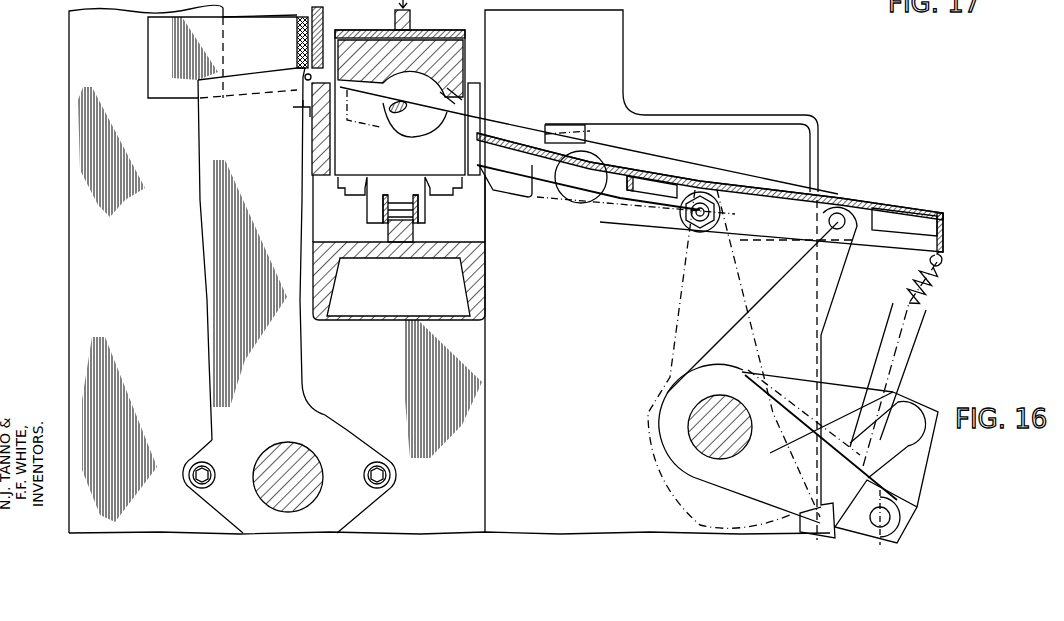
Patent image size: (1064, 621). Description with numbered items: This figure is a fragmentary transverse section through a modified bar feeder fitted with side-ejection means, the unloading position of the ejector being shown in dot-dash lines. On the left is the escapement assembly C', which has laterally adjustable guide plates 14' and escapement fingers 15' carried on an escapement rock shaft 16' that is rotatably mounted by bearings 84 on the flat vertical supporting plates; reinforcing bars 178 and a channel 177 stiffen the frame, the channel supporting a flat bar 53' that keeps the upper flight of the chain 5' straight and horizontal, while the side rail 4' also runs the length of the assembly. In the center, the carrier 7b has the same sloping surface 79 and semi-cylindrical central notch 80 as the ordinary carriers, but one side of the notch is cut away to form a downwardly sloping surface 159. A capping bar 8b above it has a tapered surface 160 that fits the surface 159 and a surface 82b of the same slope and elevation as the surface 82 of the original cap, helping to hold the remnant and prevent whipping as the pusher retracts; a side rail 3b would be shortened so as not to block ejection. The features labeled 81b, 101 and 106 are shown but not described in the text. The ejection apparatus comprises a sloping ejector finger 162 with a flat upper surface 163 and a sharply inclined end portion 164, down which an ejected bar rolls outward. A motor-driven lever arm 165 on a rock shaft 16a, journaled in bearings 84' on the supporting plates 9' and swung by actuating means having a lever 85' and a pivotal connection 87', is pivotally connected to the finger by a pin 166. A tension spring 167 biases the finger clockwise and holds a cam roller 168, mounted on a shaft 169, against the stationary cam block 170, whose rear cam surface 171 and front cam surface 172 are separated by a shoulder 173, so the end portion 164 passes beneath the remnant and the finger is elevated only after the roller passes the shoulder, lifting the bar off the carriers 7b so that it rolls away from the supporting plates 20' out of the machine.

The escapement assembly C' is at (56, 39).
The supporting plates 20' is at (427, 269).
The guide plates 14' is at (211, 52).
The escapement fingers 15' is at (314, 300).
The escapement rock shaft 16' is at (284, 460).
The rock shaft 16a is at (688, 430).
The bearings 84 is at (298, 454).
The bearings 84' is at (662, 507).
The lever 85' is at (767, 524).
The pivotal connection 87' is at (895, 468).
The side rail 4' is at (294, 162).
The carrier 7b is at (388, 175).
The capping bar 8b is at (470, 48).
The surface 82b is at (431, 66).
The bore 81b is at (413, 106).
The semi-cylindrical central notch 80 is at (429, 144).
The surface 82 is at (360, 117).
The sloping surface 79 is at (397, 114).
The plunger 101 is at (410, 14).
The downwardly sloping surface 159 is at (441, 166).
The tapered surface 160 is at (457, 100).
The inclined end portion 164 is at (454, 113).
The side rail 3b is at (474, 85).
The bracket 106 is at (376, 205).
The chain 5' is at (351, 231).
The flat bar 53' is at (425, 231).
The reinforcing bars 178 is at (487, 280).
The channel 177 is at (460, 272).
The supporting plates 9' is at (651, 271).
The cam block 170 is at (711, 121).
The front cam surface 172 is at (588, 128).
The shoulder 173 is at (607, 157).
The ejector finger 162 is at (528, 196).
The rear cam surface 171 is at (612, 211).
The upper surface 163 is at (680, 165).
The shaft 169 is at (703, 230).
The cam roller 168 is at (684, 228).
The lever arm 165 is at (660, 340).
The pin 166 is at (850, 205).
The tension spring 167 is at (935, 300).